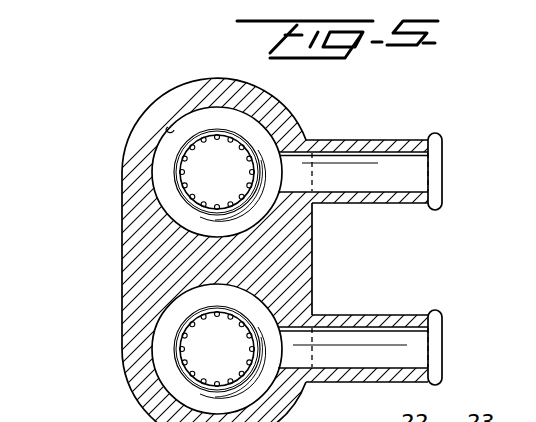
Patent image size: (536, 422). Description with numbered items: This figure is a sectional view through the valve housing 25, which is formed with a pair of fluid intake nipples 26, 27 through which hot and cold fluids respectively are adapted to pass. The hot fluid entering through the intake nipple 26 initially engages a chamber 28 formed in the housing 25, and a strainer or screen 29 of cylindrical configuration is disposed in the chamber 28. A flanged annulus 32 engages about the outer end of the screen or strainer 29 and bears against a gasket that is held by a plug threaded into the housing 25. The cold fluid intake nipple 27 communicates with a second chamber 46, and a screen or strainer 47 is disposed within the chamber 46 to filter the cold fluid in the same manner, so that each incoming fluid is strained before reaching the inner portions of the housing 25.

The valve housing 25 is at (114, 336).
The fluid intake nipple 26 is at (364, 140).
The cold fluid intake nipple 27 is at (365, 315).
The chamber 28 is at (168, 128).
The strainer or screen 29 is at (238, 145).
The flanged annulus 32 is at (163, 160).
The chamber 46 is at (162, 372).
The screen or strainer 47 is at (231, 326).